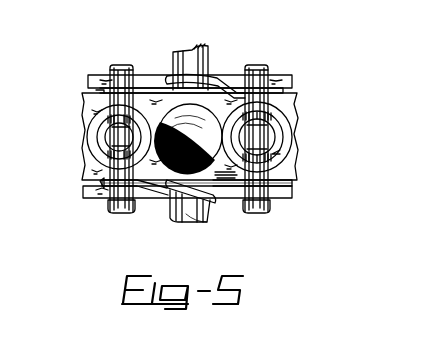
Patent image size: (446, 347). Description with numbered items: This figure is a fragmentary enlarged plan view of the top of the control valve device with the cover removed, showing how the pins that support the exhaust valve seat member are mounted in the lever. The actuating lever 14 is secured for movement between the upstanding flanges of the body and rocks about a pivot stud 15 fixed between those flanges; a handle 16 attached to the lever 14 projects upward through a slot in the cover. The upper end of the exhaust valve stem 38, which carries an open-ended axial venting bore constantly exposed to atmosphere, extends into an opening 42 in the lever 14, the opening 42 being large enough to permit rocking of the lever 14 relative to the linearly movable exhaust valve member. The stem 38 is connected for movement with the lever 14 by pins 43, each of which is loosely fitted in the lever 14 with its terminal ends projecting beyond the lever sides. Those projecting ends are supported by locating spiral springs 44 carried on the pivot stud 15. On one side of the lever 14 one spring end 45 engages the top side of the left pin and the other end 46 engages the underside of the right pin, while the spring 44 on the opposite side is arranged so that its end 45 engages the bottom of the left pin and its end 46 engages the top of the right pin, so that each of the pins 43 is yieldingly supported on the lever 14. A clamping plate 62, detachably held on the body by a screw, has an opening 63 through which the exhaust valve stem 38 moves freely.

The actuating lever 14 is at (90, 113).
The pivot stud 15 is at (184, 60).
The handle 16 is at (205, 115).
The exhaust valve stem 38 is at (105, 140).
The opening 42 is at (280, 132).
The pin 43 is at (113, 67).
The locating spiral spring 44 is at (205, 203).
The spring end 45 is at (103, 92).
The spring end 46 is at (283, 92).
The clamping plate 62 is at (148, 84).
The opening 63 is at (273, 140).